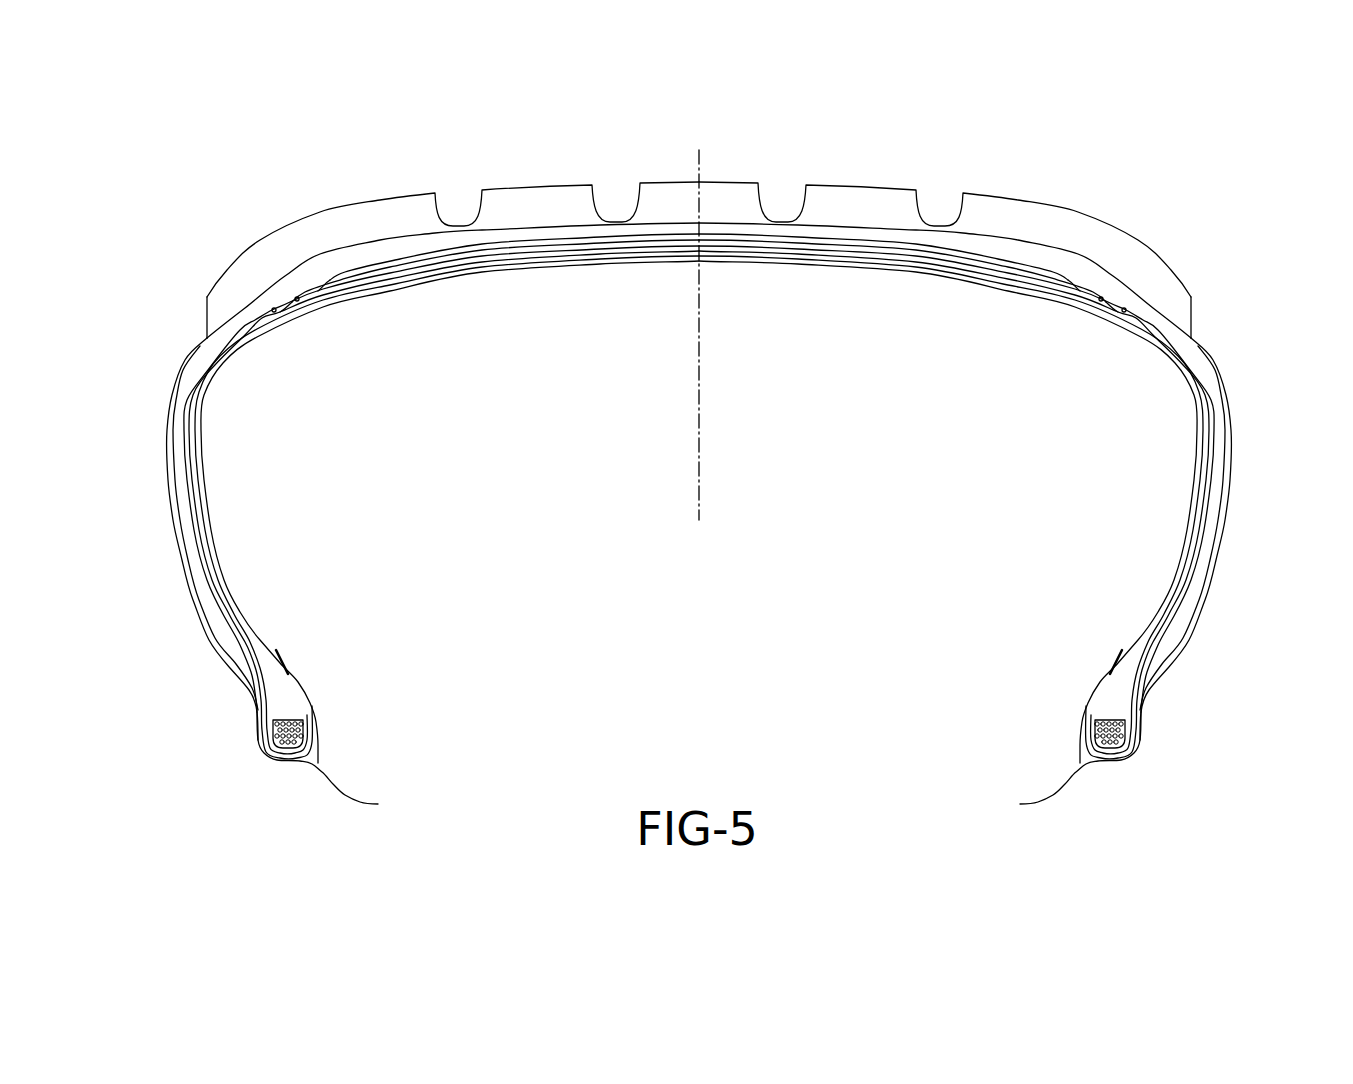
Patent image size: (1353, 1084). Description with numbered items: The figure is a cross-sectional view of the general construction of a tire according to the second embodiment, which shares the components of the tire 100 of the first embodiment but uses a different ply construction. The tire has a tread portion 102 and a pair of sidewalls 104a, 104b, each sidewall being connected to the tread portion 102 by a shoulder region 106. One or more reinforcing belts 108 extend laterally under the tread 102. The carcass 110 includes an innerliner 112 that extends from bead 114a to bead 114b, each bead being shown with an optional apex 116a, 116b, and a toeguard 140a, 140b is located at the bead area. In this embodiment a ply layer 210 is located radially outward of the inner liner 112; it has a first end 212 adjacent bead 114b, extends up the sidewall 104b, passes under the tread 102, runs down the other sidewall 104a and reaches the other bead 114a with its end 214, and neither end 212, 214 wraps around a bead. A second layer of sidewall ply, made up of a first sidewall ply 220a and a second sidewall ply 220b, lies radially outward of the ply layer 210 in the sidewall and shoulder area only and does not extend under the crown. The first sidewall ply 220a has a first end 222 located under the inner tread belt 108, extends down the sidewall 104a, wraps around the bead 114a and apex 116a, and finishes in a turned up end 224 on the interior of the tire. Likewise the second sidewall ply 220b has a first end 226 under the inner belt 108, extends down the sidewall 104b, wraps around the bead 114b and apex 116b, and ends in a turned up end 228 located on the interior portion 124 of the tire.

The tire 100 is at (190, 642).
The tread portion 102 is at (858, 182).
The sidewall 104a is at (1236, 455).
The sidewall 104b is at (162, 455).
The shoulder region 106 is at (182, 330).
The reinforcing belt 108 is at (353, 256).
The carcass 110 is at (248, 374).
The innerliner 112 is at (585, 262).
The bead 114a is at (1086, 722).
The bead 114b is at (312, 722).
The apex 116a is at (1153, 624).
The apex 116b is at (245, 624).
The interior portion 124 is at (1080, 532).
The toeguard 140a is at (1049, 765).
The toeguard 140b is at (347, 765).
The ply layer 210 is at (778, 262).
The first end 212 is at (270, 730).
The end 214 is at (1128, 730).
The first sidewall ply 220a is at (1212, 500).
The second sidewall ply 220b is at (186, 500).
The first end 222 is at (1075, 284).
The turned up end 224 is at (1112, 662).
The first end 226 is at (323, 284).
The turned up end 228 is at (285, 662).